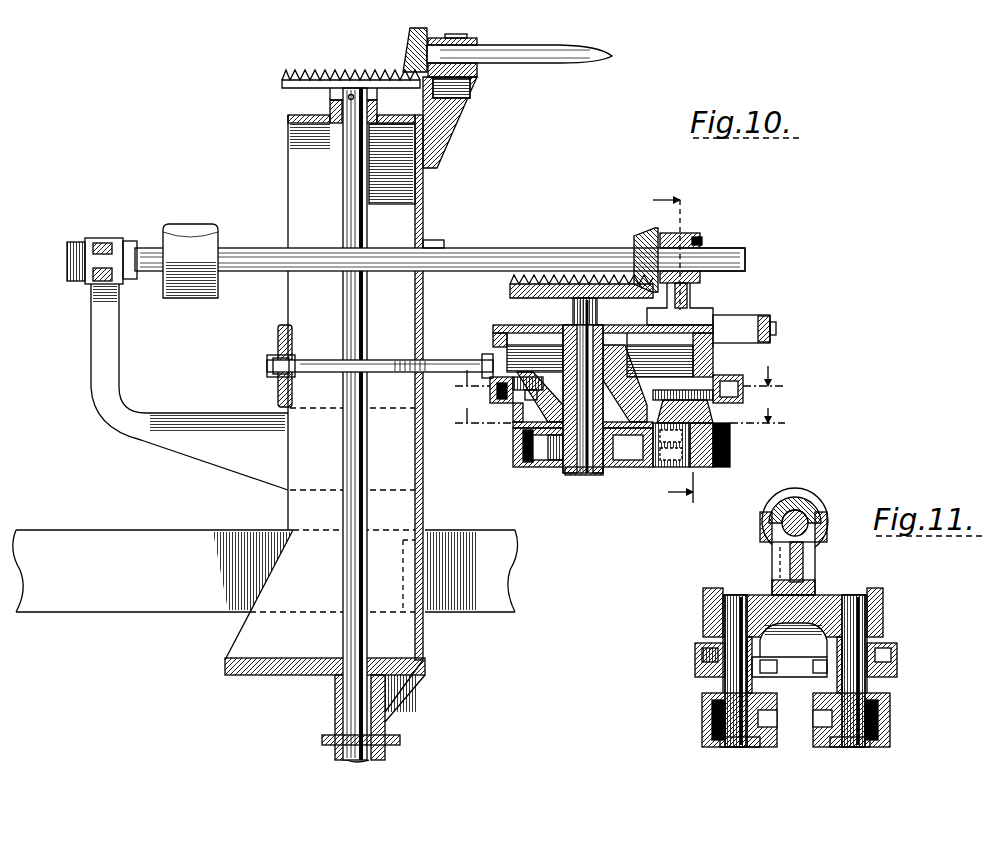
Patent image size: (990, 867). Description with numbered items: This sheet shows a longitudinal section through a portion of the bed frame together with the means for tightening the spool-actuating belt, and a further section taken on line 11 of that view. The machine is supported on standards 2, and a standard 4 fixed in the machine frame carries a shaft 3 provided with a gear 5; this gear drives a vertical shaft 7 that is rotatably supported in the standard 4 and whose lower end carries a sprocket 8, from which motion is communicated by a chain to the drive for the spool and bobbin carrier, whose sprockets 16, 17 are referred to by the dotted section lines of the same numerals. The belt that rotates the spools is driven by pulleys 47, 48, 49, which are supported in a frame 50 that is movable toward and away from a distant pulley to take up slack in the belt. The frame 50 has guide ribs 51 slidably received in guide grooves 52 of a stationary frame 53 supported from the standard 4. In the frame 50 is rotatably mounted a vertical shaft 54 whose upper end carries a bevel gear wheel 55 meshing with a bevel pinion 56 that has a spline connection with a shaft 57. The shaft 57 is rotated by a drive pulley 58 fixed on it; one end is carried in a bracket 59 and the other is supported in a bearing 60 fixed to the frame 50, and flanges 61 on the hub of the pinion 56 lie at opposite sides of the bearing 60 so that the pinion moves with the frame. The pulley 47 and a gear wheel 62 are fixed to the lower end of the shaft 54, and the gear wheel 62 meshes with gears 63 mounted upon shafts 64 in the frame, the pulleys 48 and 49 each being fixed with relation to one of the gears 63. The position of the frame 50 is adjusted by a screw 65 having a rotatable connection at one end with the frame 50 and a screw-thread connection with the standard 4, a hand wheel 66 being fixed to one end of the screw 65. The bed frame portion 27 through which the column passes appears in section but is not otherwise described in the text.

In FIG. 11, the standards 2 is at (809, 506).
In FIG. 10, the shaft 3 is at (511, 51).
In FIG. 10, the standard 4 is at (416, 216).
In FIG. 10, the gear 5 is at (416, 29).
In FIG. 10, the vertical shaft 7 is at (350, 198).
In FIG. 10, the sprocket 8 is at (399, 740).
In FIG. 10, the shaft 11 is at (677, 350).
In FIG. 10, the sprocket 16 is at (614, 426).
In FIG. 10, the sprocket 17 is at (621, 381).
In FIG. 10, the beam 27 is at (511, 586).
In FIG. 10, the pulley 47 is at (513, 456).
In FIG. 11, the pulley 48 is at (889, 724).
In FIG. 10, the pulley 49 is at (731, 456).
In FIG. 11, the pulley 49 is at (706, 721).
In FIG. 10, the frame 50 is at (506, 338).
In FIG. 11, the frame 50 is at (810, 611).
In FIG. 11, the guide ribs 51 is at (736, 613).
In FIG. 10, the guide grooves 52 is at (729, 333).
In FIG. 11, the guide grooves 52 is at (713, 607).
In FIG. 10, the stationary frame 53 is at (753, 321).
In FIG. 11, the stationary frame 53 is at (886, 631).
In FIG. 10, the vertical shaft 54 is at (584, 467).
In FIG. 10, the bevel gear wheel 55 is at (534, 280).
In FIG. 10, the bevel pinion 56 is at (641, 236).
In FIG. 10, the shaft 57 is at (476, 252).
In FIG. 10, the drive pulley 58 is at (194, 299).
In FIG. 10, the bracket 59 is at (100, 300).
In FIG. 10, the bearing 60 is at (686, 308).
In FIG. 11, the bearing 60 is at (815, 566).
In FIG. 10, the flanges 61 is at (666, 234).
In FIG. 10, the gear wheel 62 is at (492, 393).
In FIG. 10, the gears 63 is at (746, 393).
In FIG. 11, the gears 63 is at (700, 661).
In FIG. 11, the shafts 64 is at (741, 741).
In FIG. 10, the screw 65 is at (401, 373).
In FIG. 10, the hand wheel 66 is at (283, 331).